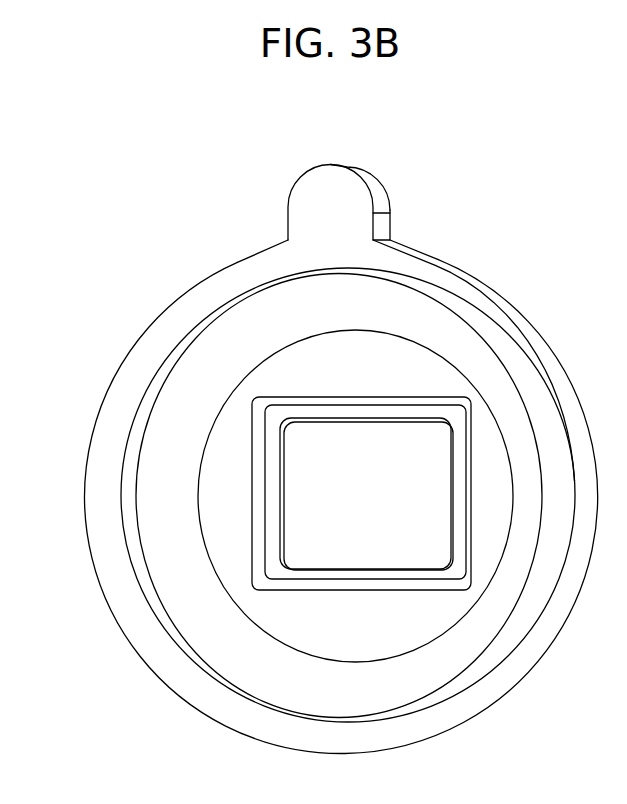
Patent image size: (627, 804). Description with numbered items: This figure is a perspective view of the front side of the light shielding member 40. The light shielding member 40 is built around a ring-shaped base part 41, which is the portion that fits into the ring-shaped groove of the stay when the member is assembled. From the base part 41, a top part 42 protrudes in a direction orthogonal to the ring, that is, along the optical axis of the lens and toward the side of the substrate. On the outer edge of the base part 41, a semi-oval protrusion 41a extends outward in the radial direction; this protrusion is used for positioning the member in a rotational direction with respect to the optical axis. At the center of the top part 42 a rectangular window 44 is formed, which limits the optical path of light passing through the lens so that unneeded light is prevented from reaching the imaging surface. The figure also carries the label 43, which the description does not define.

The light shielding member 40 is at (478, 262).
The ring-shaped base part 41 is at (562, 372).
The semi-oval protrusion for positioning 41a is at (298, 222).
The top part 42 is at (228, 492).
The outer flange 43 is at (209, 276).
The rectangular window 44 is at (360, 556).